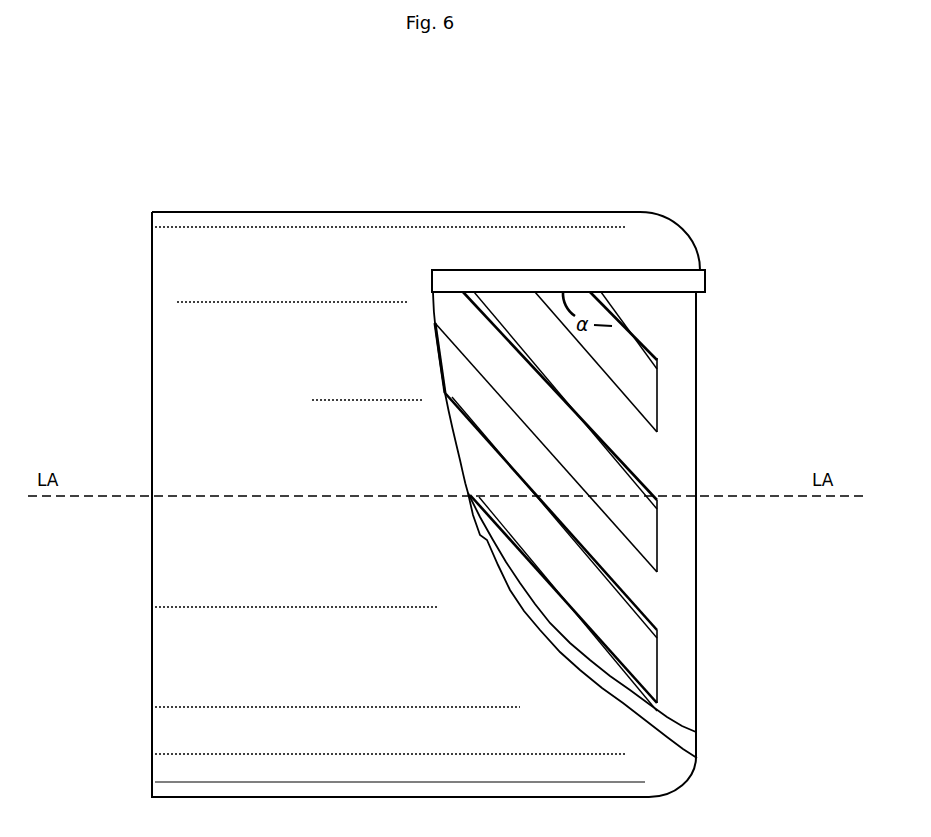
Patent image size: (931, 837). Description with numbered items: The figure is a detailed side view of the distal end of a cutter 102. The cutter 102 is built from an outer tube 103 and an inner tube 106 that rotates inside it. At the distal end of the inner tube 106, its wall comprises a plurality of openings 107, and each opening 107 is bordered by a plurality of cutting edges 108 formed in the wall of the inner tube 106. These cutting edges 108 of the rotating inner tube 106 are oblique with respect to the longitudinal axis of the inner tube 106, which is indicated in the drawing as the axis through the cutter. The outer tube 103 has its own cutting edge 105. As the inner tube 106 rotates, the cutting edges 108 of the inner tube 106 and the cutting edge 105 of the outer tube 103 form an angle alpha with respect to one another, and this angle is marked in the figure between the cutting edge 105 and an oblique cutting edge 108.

The cutter 102 is at (415, 210).
The outer tube 103 is at (258, 264).
The cutting edge of the outer tube 105 is at (683, 281).
The inner tube 106 is at (647, 310).
The openings 107 is at (600, 486).
The cutting edges 108 is at (617, 318).